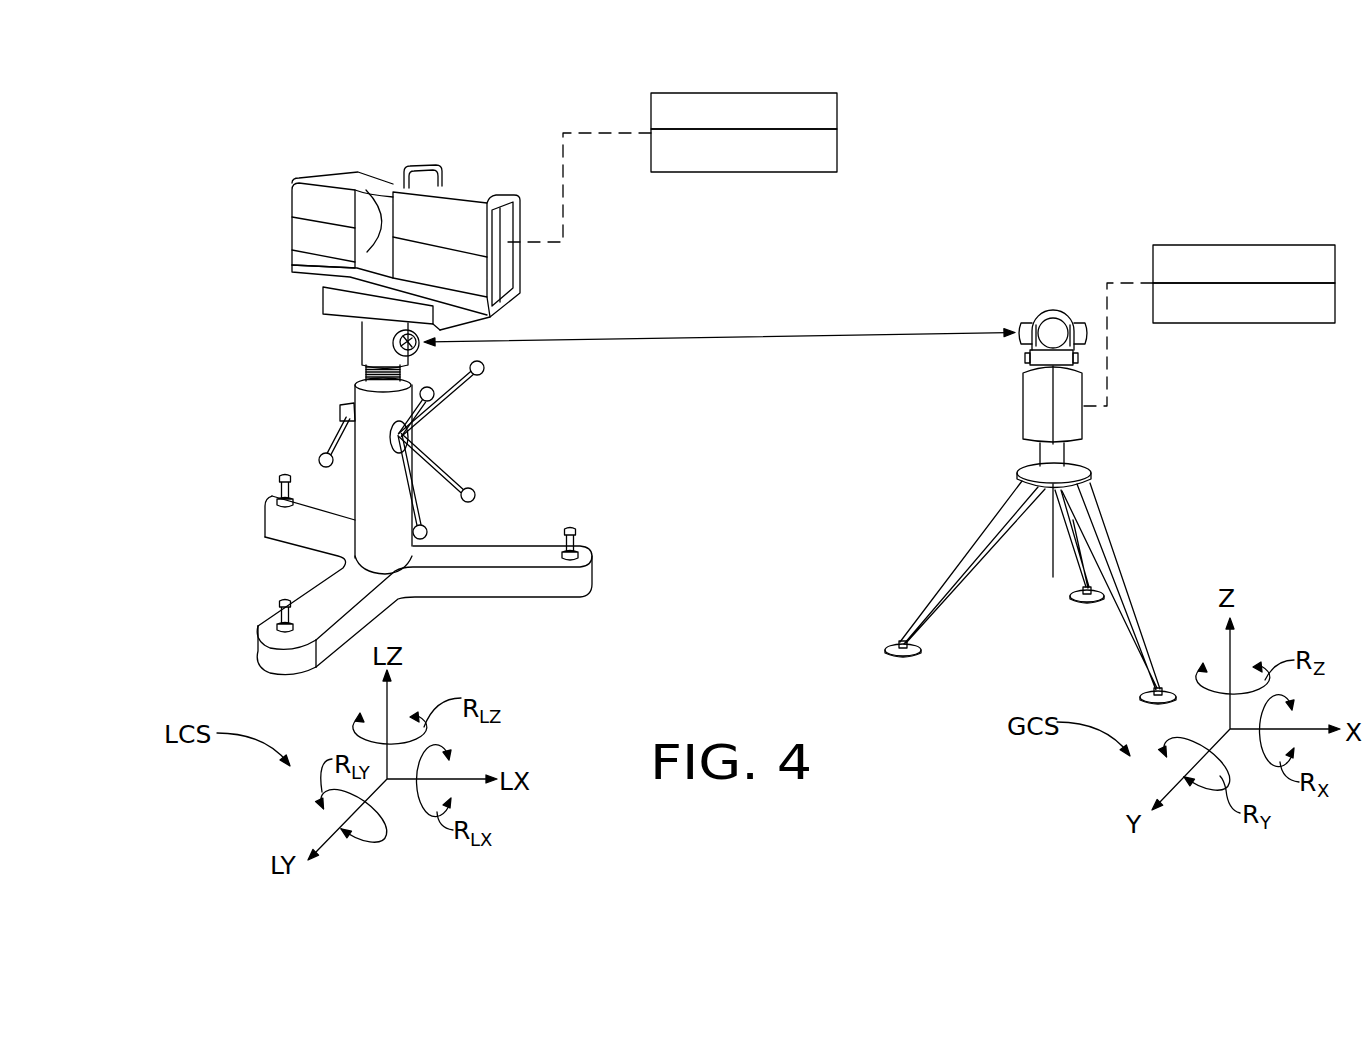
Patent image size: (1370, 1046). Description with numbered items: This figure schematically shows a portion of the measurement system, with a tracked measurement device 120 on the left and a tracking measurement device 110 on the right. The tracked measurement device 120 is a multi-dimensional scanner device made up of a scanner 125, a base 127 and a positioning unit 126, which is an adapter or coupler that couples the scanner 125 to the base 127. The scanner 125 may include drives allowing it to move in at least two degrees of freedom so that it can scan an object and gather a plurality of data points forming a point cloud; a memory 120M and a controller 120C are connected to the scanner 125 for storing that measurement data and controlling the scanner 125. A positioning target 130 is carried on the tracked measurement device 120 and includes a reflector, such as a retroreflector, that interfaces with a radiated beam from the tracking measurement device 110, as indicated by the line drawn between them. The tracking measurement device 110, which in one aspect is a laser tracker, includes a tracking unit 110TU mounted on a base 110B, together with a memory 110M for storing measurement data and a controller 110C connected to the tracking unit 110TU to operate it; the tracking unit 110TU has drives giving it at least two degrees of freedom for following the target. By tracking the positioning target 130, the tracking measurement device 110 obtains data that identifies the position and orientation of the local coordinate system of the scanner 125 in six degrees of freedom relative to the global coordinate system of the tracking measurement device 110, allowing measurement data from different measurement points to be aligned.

The tracked measurement device 120 is at (295, 159).
The scanner 125 is at (450, 190).
The positioning unit 126 is at (378, 341).
The base 127 is at (315, 603).
The positioning target 130 is at (421, 347).
The memory of scanner 120M is at (778, 93).
The controller of scanner 120C is at (778, 172).
The tracking measurement device 110 is at (1075, 285).
The tracking unit 110TU is at (1054, 309).
The base 110B is at (977, 545).
The memory 110M is at (1232, 245).
The controller or processor 110C is at (1232, 323).